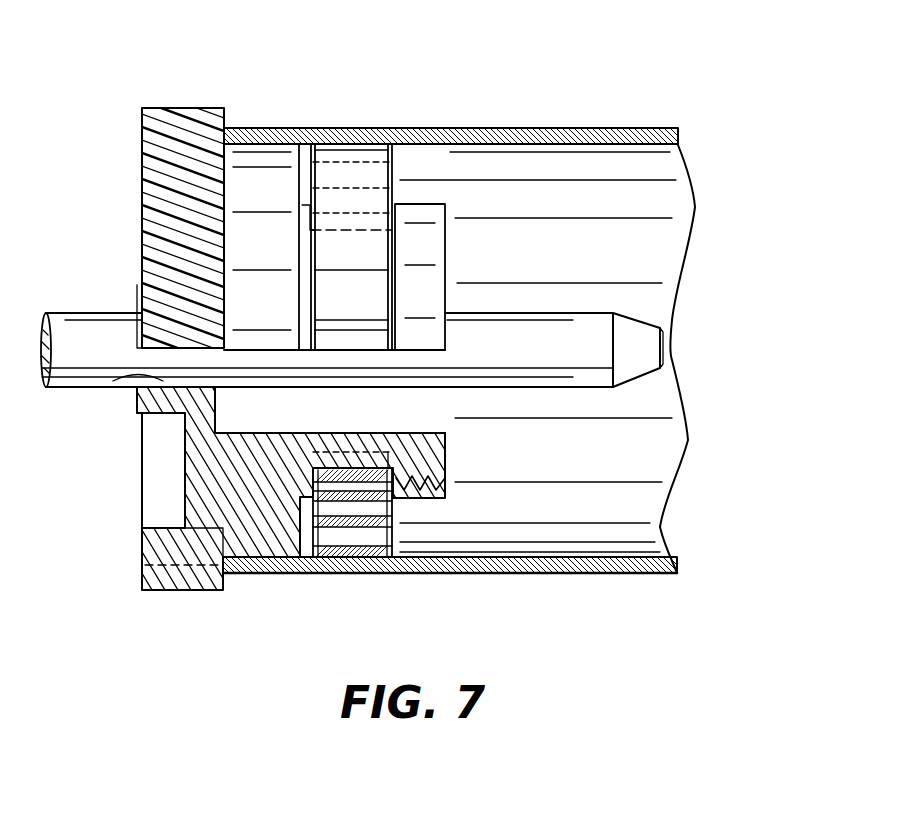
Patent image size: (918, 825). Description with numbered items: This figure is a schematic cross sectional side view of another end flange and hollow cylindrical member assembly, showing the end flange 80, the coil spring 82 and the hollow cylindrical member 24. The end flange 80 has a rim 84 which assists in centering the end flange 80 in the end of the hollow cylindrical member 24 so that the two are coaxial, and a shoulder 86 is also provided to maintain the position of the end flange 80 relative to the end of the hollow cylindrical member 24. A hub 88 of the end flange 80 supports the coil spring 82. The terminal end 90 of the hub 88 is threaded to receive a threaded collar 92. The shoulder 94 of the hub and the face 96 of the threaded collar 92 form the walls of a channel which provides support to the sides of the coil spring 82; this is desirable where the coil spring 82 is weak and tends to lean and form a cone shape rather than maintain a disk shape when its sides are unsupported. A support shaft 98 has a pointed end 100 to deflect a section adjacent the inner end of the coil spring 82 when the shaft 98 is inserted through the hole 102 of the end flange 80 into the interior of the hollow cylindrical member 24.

The hollow cylindrical member 24 is at (540, 128).
The end flange 80 is at (93, 487).
The coil spring 82 is at (398, 162).
The rim 84 is at (260, 555).
The shoulder 86 is at (227, 578).
The hub 88 is at (343, 435).
The terminal end 90 is at (450, 460).
The threaded collar 92 is at (413, 500).
The shoulder of hub 94 is at (301, 205).
The face of threaded collar 96 is at (400, 225).
The support shaft 98 is at (107, 312).
The pointed end 100 is at (655, 326).
The hole 102 is at (135, 383).